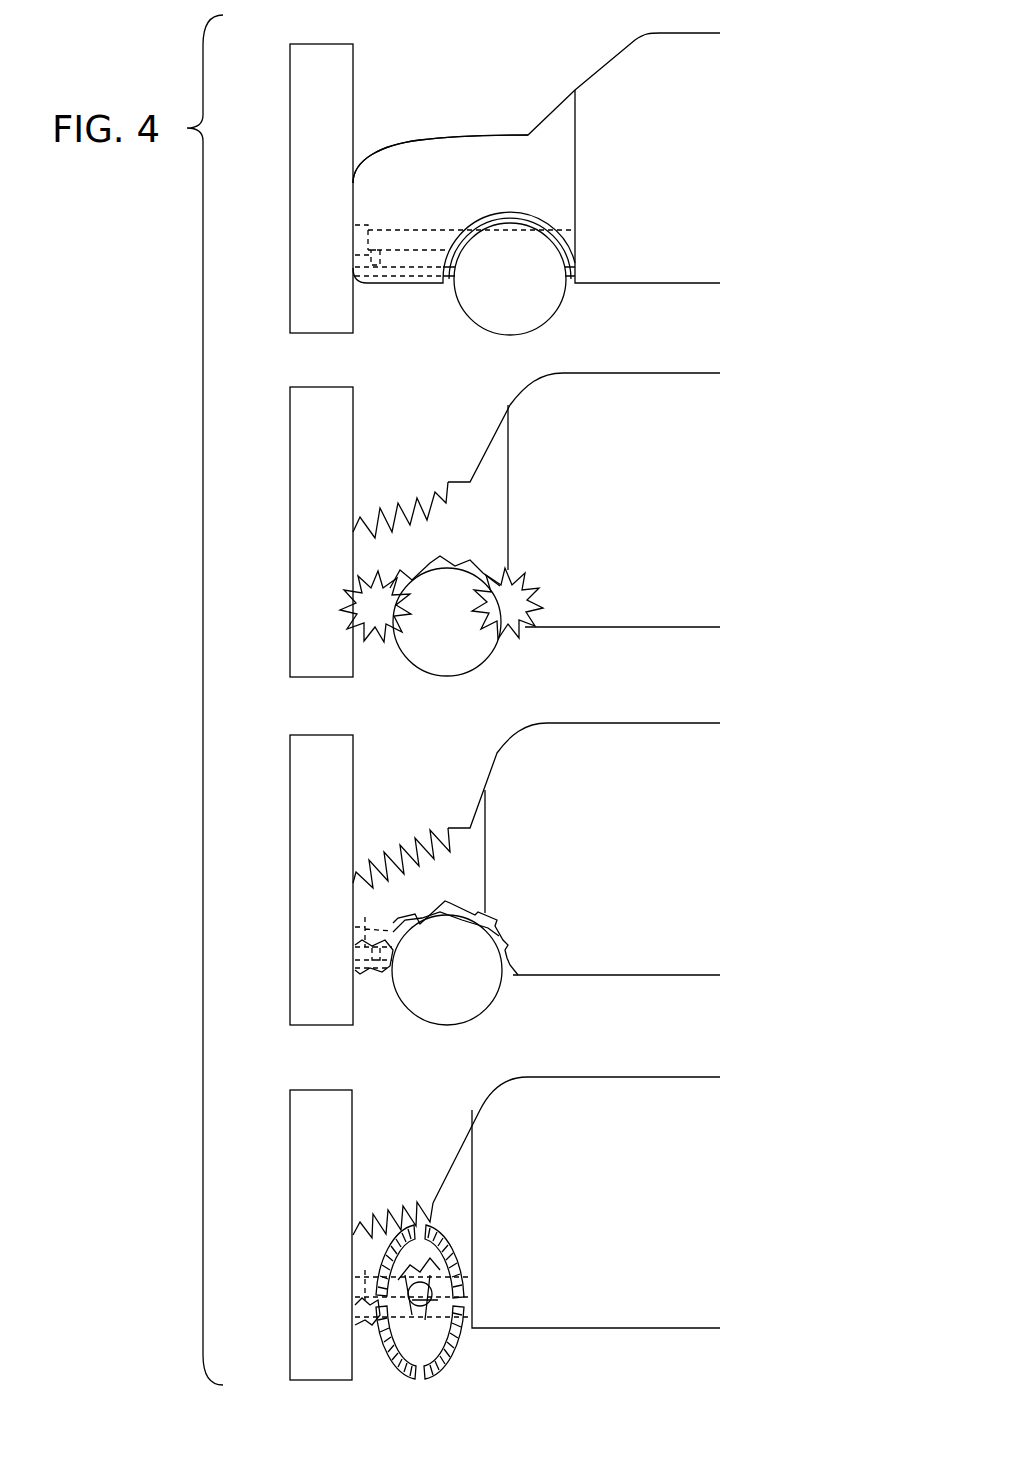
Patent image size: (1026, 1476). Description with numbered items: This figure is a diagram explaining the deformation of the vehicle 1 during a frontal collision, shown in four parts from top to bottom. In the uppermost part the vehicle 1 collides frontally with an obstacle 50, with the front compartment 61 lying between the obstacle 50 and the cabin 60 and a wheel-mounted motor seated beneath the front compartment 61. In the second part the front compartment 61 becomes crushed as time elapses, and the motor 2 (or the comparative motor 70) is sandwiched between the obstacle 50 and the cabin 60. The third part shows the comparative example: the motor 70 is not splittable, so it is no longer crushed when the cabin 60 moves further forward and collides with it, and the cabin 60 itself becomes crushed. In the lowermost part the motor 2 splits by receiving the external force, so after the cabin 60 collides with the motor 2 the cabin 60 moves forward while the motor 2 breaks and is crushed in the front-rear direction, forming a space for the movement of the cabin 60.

The vehicle 1 is at (593, 73).
The motor 2 is at (380, 1257).
The obstacle 50 is at (353, 100).
The cabin 60 is at (577, 153).
The front compartment 61 is at (473, 135).
The motor according to a comparative example 70 is at (556, 309).